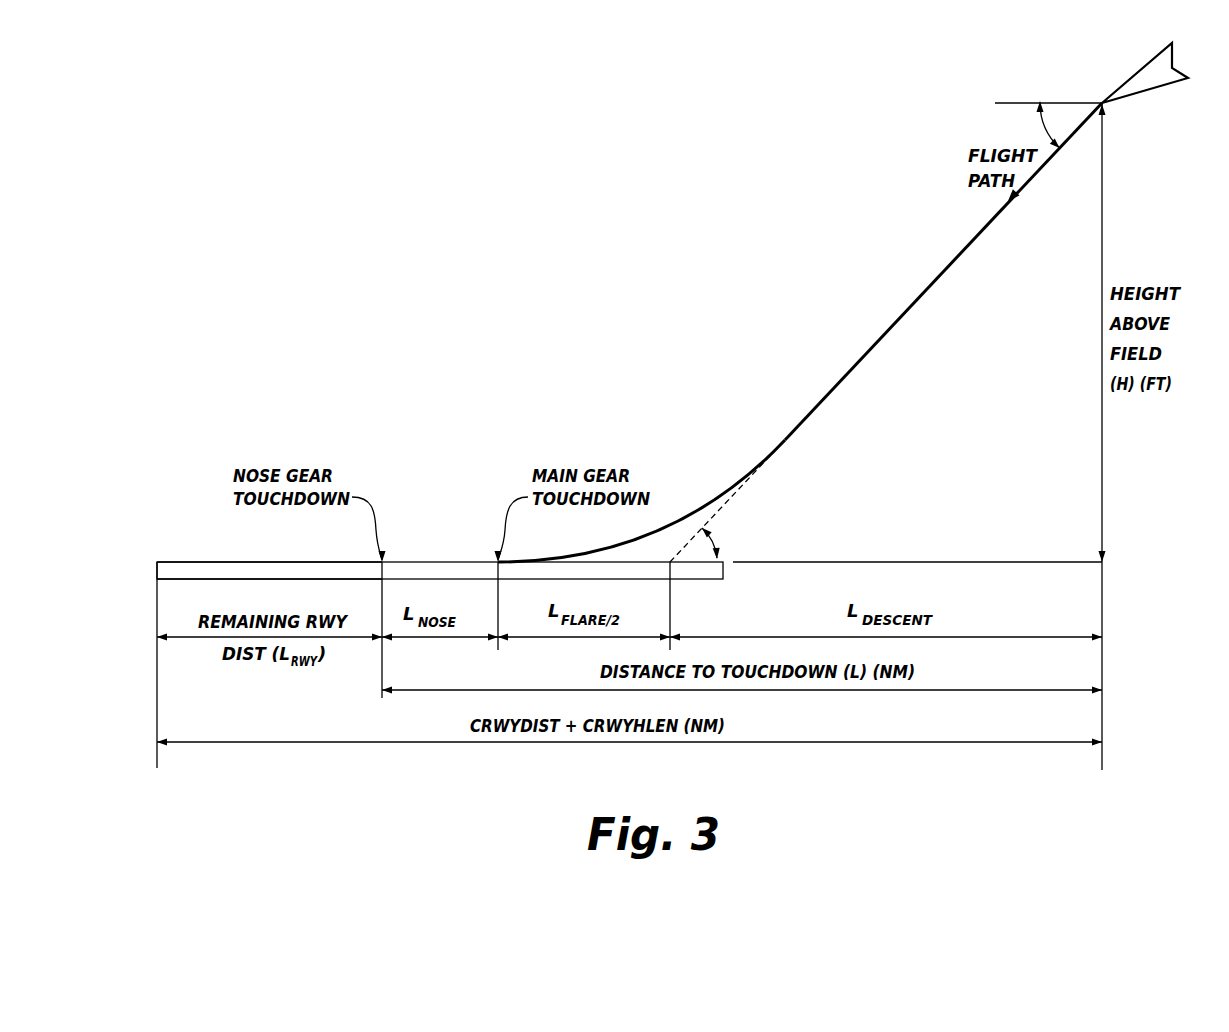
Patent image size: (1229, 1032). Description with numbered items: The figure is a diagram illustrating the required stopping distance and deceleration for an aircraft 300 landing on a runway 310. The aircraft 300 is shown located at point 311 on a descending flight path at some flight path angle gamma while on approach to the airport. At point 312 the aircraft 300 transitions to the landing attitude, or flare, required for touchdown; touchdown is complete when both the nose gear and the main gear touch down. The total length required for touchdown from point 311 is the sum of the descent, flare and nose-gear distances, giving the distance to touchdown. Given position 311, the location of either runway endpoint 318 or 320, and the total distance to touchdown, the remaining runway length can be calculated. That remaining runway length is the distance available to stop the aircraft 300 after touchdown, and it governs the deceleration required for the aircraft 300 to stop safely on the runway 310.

The aircraft 300 is at (1146, 91).
The point 311 is at (1101, 102).
The point 312 is at (785, 441).
The runway endpoint 318 is at (717, 561).
The runway 310 is at (405, 562).
The runway endpoint 320 is at (157, 562).